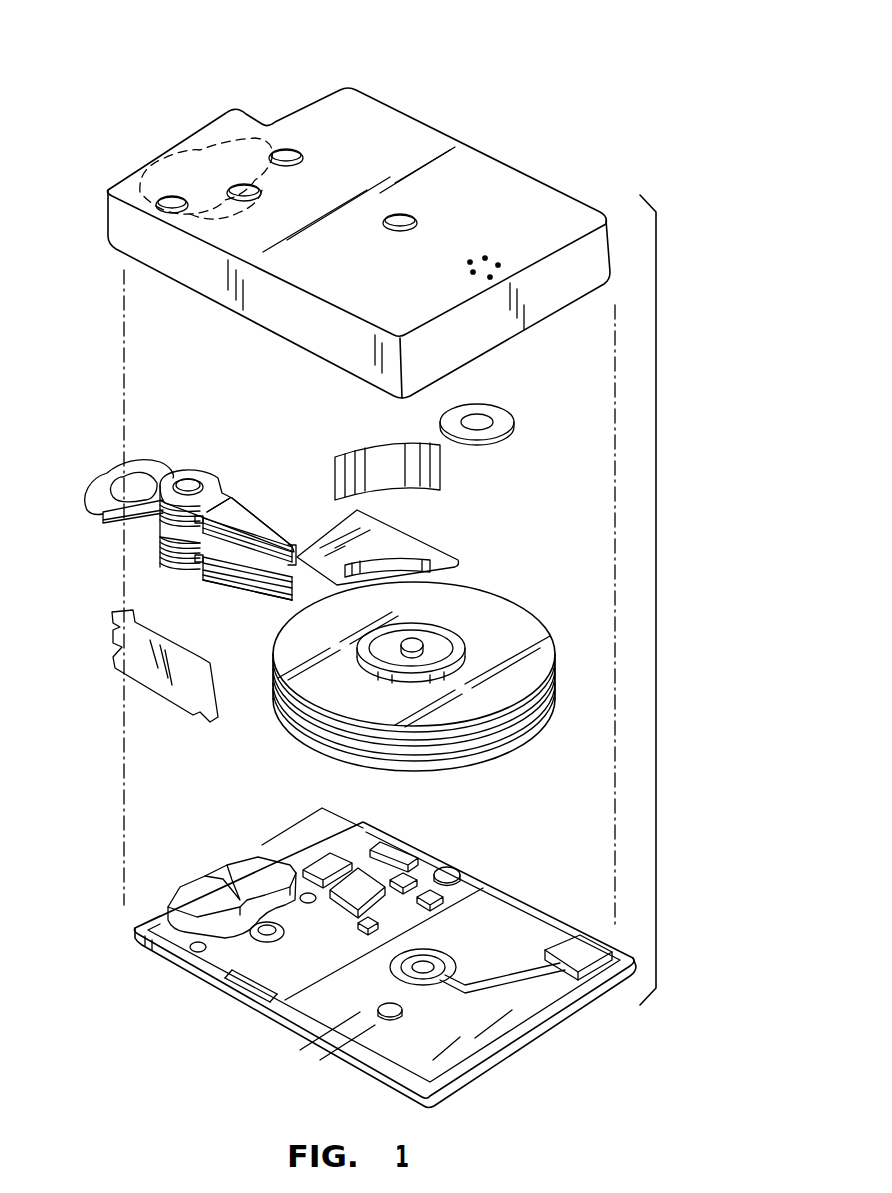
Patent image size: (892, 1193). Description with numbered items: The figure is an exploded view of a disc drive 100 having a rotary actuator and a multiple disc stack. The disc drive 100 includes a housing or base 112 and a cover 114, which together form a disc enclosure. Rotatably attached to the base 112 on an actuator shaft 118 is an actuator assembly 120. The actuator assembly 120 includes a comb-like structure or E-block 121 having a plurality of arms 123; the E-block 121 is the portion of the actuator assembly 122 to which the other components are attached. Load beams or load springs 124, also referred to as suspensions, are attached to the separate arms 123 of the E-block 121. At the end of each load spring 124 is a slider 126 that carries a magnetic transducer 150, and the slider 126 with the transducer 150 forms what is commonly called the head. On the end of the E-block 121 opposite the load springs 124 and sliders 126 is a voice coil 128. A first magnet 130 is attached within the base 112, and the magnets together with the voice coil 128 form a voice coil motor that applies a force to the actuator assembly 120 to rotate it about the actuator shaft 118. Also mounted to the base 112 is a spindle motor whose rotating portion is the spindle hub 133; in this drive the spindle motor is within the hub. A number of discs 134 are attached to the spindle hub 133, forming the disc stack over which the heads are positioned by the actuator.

The disc drive 100 is at (536, 74).
The base 112 is at (532, 925).
The cover 114 is at (505, 188).
The actuator shaft 118 is at (188, 485).
The actuator assembly 120 is at (145, 528).
The E-block 121 is at (165, 550).
The actuator assembly 122 is at (205, 578).
The arms 123 is at (238, 495).
The load springs 124 is at (252, 518).
The slider 126 is at (292, 545).
The voice coil 128 is at (105, 485).
The first magnet 130 is at (210, 128).
The spindle hub 133 is at (418, 645).
The discs 134 is at (530, 623).
The magnetic transducer 150 is at (305, 560).